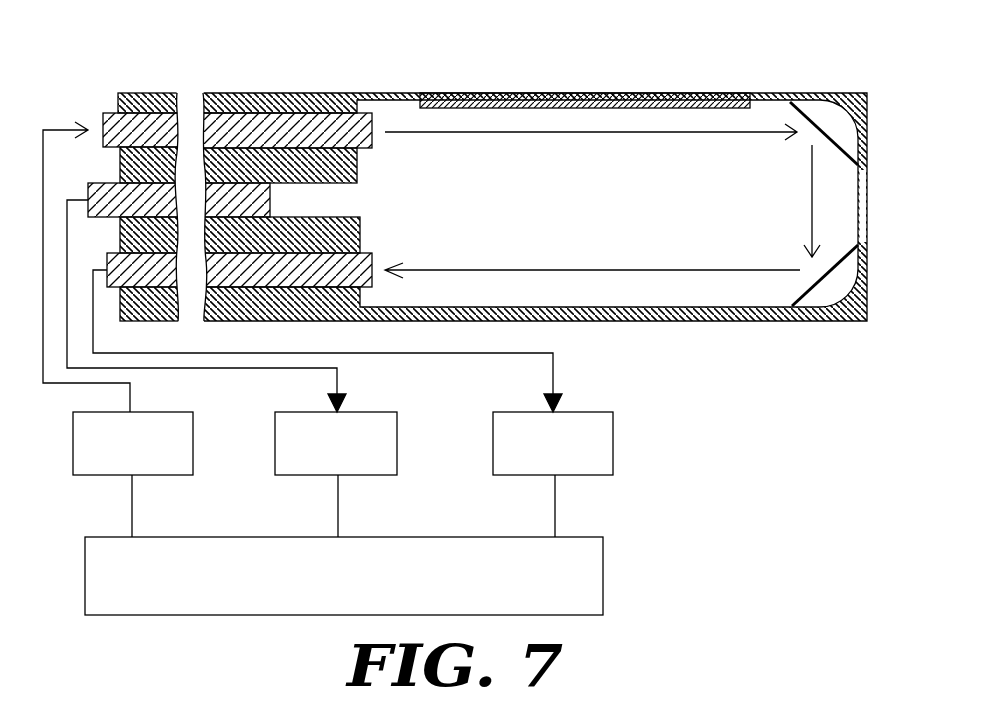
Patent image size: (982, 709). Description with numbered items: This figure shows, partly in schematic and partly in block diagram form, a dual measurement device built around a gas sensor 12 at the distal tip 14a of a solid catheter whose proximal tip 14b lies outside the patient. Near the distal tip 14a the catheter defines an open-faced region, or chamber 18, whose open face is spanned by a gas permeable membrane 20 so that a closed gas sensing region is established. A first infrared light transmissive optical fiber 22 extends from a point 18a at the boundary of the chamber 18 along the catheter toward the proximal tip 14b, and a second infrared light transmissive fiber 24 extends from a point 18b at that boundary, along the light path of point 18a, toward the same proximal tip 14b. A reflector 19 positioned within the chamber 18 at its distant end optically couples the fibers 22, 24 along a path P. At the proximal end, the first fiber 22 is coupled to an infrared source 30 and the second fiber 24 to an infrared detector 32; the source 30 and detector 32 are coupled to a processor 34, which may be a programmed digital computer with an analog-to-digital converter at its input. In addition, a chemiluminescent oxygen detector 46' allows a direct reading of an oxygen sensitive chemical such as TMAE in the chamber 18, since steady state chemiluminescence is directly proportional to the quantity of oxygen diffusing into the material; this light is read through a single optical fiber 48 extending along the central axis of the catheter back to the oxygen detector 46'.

The gas sensor 12 is at (731, 34).
The distal tip 14a is at (863, 54).
The proximal tip 14b is at (173, 52).
The open-faced region 18 is at (621, 227).
The first fiber boundary point 18a is at (372, 120).
The second fiber boundary point 18b is at (375, 255).
The reflector 19 is at (828, 130).
The gas permeable membrane 20 is at (597, 93).
The first infrared light transmissive optical fiber 22 is at (141, 92).
The second infrared light transmissive fiber 24 is at (165, 320).
The infrared source 30 is at (151, 460).
The infrared detector 32 is at (575, 460).
The processor 34 is at (372, 588).
The chemiluminescent oxygen detector 46' is at (336, 443).
The single optical fiber 48 is at (112, 185).
The optical path P is at (566, 134).